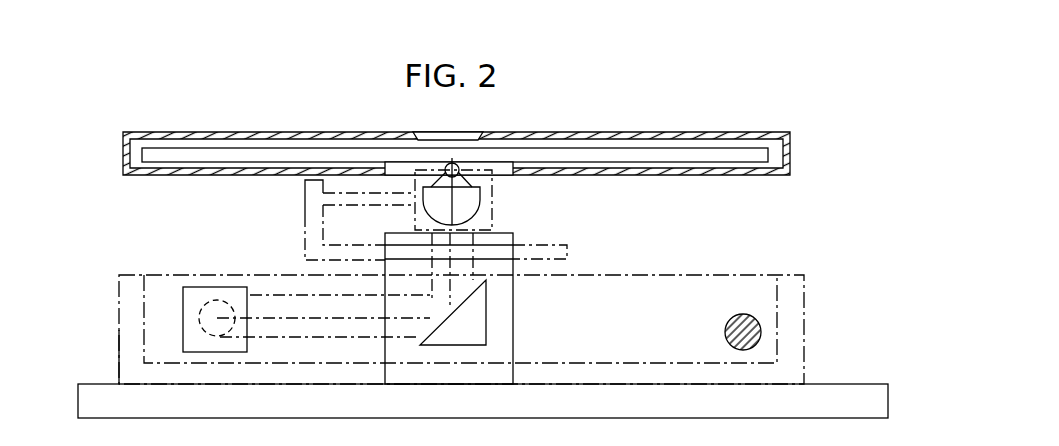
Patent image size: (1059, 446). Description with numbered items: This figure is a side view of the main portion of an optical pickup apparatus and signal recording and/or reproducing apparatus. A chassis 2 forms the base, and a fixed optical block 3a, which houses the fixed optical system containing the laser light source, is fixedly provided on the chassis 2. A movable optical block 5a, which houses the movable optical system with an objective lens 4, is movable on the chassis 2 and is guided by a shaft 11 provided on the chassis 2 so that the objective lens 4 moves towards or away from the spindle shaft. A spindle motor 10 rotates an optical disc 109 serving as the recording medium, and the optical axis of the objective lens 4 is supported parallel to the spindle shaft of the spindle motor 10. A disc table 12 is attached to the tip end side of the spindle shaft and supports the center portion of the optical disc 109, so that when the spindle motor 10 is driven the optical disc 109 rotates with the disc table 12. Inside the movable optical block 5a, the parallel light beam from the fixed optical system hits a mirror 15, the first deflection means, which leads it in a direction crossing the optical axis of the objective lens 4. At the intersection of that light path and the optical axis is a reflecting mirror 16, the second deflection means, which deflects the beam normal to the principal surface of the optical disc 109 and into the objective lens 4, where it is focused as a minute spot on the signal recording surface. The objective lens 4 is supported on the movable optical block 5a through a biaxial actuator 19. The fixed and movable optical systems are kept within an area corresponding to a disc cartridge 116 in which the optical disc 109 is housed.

The chassis 2 is at (843, 392).
The fixed optical block 3a is at (128, 360).
The objective lens 4 is at (480, 195).
The movable optical block 5a is at (140, 317).
The spindle motor 10 is at (505, 295).
The shaft 11 is at (742, 315).
The disc table 12 is at (513, 165).
The mirror 15 is at (187, 300).
The reflecting mirror 16 is at (477, 327).
The biaxial actuator 19 is at (307, 212).
The optical disc 109 is at (707, 155).
The disc cartridge 116 is at (790, 150).